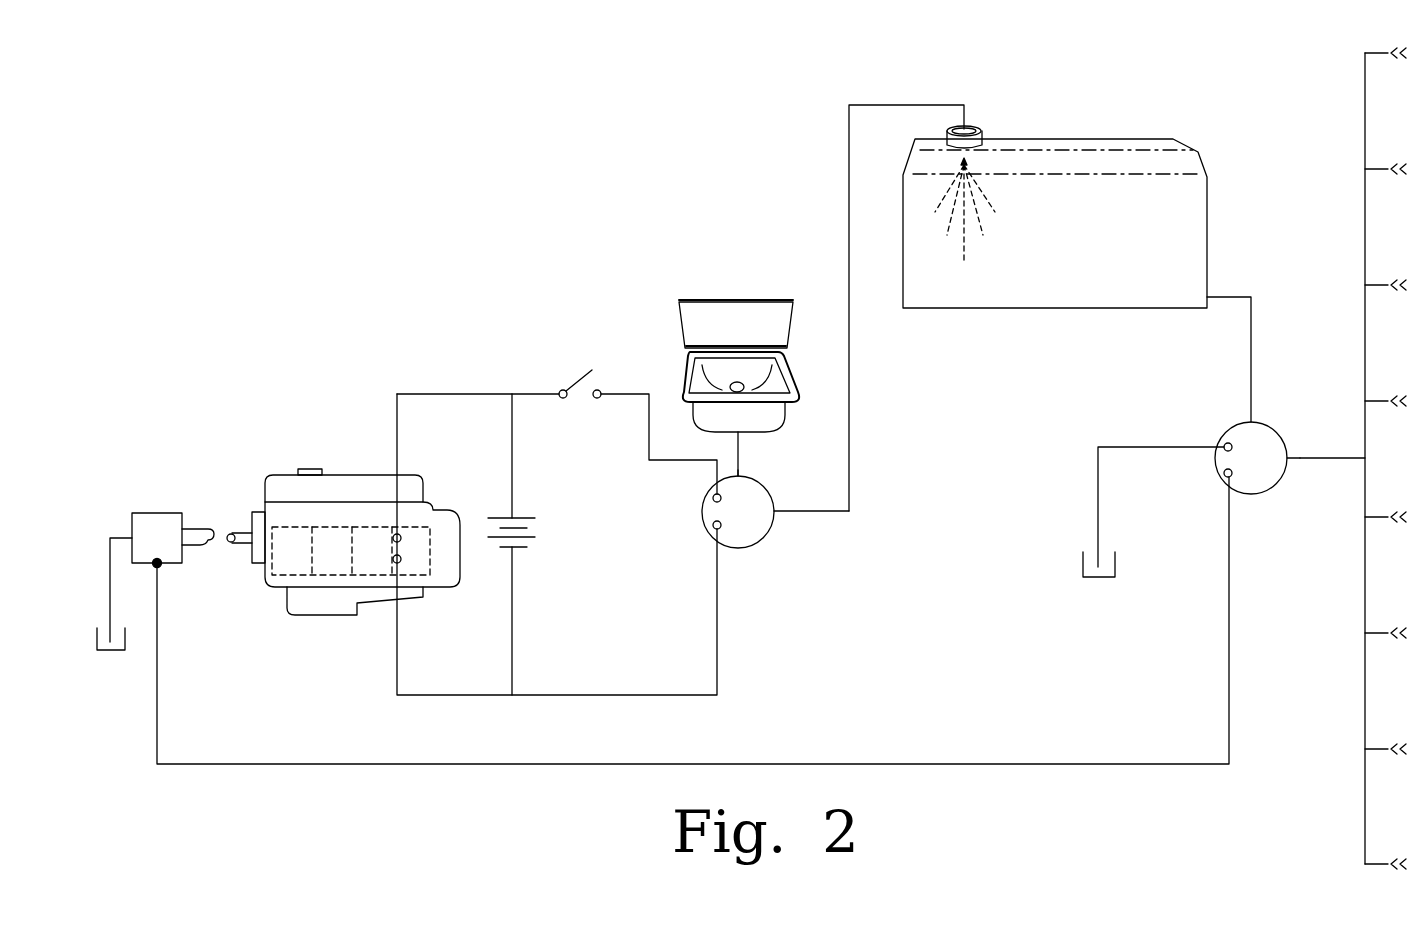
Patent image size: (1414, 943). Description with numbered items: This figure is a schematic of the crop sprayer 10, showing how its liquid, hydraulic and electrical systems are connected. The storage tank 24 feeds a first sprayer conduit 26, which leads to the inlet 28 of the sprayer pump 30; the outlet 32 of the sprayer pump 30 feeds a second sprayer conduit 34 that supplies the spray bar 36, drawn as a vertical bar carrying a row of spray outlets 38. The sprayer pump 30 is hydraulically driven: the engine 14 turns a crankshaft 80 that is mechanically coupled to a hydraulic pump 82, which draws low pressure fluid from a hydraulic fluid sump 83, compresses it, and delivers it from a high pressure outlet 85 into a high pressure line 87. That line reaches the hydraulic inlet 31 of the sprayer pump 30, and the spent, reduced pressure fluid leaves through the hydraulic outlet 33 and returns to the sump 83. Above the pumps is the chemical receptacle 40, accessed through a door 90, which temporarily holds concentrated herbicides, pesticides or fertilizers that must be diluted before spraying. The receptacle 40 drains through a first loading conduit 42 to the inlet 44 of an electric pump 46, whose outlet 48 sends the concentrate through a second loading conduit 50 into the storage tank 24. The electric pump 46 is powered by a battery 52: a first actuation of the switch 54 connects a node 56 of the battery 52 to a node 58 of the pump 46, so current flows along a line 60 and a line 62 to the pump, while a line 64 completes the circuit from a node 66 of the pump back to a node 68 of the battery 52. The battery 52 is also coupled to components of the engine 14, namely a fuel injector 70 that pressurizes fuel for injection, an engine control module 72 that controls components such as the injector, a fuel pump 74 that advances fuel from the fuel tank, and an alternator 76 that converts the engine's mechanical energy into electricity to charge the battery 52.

The crop sprayer 10 is at (403, 197).
The engine 14 is at (348, 467).
The storage tank 24 is at (1075, 138).
The first sprayer conduit 26 is at (1252, 362).
The inlet 28 is at (1262, 418).
The sprayer pump 30 is at (1216, 458).
The hydraulic inlet 31 is at (1224, 478).
The outlet 32 is at (1291, 470).
The hydraulic outlet 33 is at (1222, 445).
The second sprayer conduit 34 is at (1340, 462).
The spray bar 36 is at (1365, 552).
The nozzles 38 is at (1366, 50).
The chemical receptacle 40 is at (802, 372).
The first loading conduit 42 is at (741, 441).
The inlet 44 is at (745, 462).
The electric pump 46 is at (752, 548).
The outlet 48 is at (775, 520).
The second loading conduit 50 is at (851, 448).
The battery 52 is at (537, 532).
The switch 54 is at (578, 385).
The node 56 is at (515, 516).
The node 58 is at (712, 496).
The line 60 is at (530, 396).
The line 62 is at (645, 428).
The line 64 is at (565, 690).
The node 66 is at (712, 527).
The node 68 is at (518, 550).
The fuel injector 70 is at (430, 590).
The engine control module 72 is at (378, 590).
The fuel pump 74 is at (340, 590).
The alternator 76 is at (280, 590).
The crankshaft 80 is at (238, 528).
The hydraulic pump 82 is at (162, 513).
The hydraulic fluid sump 83 is at (110, 652).
The high pressure outlet 85 is at (160, 567).
The high pressure line 87 is at (347, 766).
The door 90 is at (733, 315).